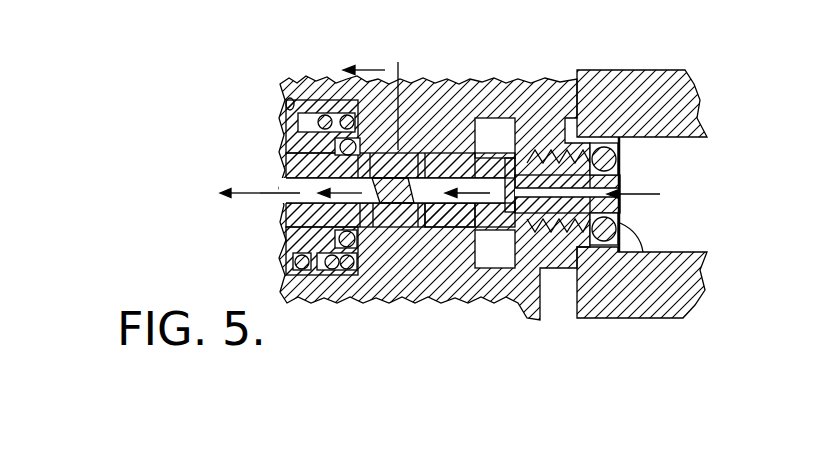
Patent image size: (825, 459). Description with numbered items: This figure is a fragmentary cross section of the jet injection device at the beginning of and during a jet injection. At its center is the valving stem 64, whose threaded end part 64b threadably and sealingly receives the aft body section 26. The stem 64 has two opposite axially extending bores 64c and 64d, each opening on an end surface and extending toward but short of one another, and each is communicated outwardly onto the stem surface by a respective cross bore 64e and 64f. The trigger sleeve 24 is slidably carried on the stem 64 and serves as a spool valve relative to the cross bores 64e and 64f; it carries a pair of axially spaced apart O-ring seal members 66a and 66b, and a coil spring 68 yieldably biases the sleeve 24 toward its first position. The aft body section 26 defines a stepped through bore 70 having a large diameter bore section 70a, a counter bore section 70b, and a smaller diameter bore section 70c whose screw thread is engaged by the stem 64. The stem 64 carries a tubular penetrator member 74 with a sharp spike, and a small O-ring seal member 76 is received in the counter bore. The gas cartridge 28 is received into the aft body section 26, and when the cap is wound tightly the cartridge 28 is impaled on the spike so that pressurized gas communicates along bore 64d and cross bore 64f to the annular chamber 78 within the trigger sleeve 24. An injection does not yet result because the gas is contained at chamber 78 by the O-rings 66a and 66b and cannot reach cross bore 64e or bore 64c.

The trigger sleeve 24 is at (451, 110).
The aft body section 26 is at (680, 92).
The gas cartridge 28 is at (703, 197).
The valving stem 64 is at (285, 178).
The threaded end part 64b is at (552, 150).
The axially extending bore 64c is at (277, 190).
The axially extending bore 64d is at (483, 196).
The cross bore 64e is at (285, 232).
The cross bore 64f is at (420, 222).
The O-ring seal member 66a is at (370, 232).
The O-ring seal member 66b is at (442, 235).
The coil spring 68 is at (320, 272).
The stepped through bore 70 is at (618, 165).
The large diameter bore section 70a is at (592, 255).
The counter bore section 70b is at (657, 255).
The smaller diameter bore section 70c is at (660, 248).
The tubular penetrator member 74 is at (538, 171).
The O-ring seal member 76 is at (604, 145).
The annular chamber 78 is at (379, 92).